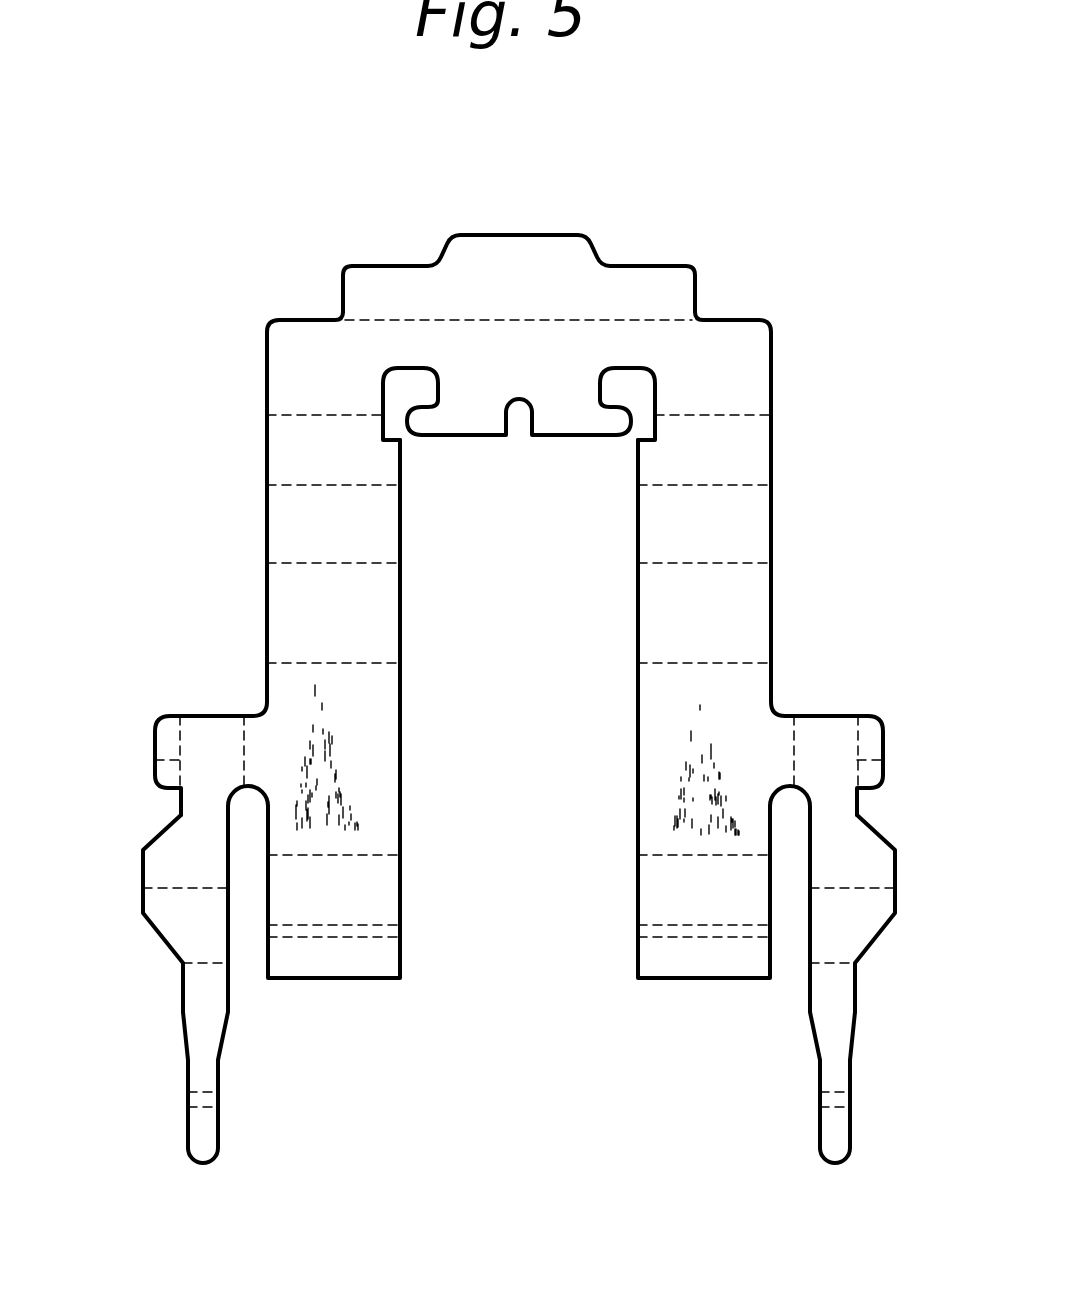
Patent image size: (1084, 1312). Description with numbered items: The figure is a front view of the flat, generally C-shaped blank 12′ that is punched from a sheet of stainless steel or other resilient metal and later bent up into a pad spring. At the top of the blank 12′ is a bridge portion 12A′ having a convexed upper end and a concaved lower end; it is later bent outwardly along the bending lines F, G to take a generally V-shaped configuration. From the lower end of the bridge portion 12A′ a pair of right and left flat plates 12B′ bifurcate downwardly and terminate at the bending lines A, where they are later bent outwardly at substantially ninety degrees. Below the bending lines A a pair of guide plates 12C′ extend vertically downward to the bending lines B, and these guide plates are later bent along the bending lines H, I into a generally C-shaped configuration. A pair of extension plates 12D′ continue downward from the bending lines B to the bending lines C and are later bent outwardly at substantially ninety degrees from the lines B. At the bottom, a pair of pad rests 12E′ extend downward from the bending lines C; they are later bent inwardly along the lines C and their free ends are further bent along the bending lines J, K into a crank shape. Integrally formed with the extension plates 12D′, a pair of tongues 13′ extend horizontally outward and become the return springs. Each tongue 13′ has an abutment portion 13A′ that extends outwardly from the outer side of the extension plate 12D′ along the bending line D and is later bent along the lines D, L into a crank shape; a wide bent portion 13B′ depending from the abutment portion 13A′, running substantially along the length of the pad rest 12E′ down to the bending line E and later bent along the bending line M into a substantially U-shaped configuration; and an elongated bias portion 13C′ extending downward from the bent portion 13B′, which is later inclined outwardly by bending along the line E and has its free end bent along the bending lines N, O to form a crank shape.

The blank 12′ is at (740, 256).
The bridge portion 12A′ is at (378, 285).
The flat plate 12B′ is at (290, 352).
The guide plate 12C′ is at (283, 520).
The extension plate 12D′ is at (375, 750).
The pad rest 12E′ is at (344, 964).
The tongue 13′ is at (141, 849).
The abutment portion 13A′ is at (168, 728).
The bent portion 13B′ is at (172, 935).
The bias portion 13C′ is at (200, 1058).
The bending line A is at (300, 412).
The bending line B is at (313, 660).
The bending line C is at (365, 852).
The bending line D is at (250, 712).
The bending line E is at (203, 968).
The bending line F is at (510, 320).
The bending line G is at (483, 382).
The bending line H is at (307, 483).
The bending line I is at (367, 565).
The bending line J is at (384, 924).
The bending line K is at (385, 950).
The bending line L is at (152, 763).
The bending line M is at (168, 892).
The bending line N is at (218, 1083).
The bending line O is at (207, 1110).